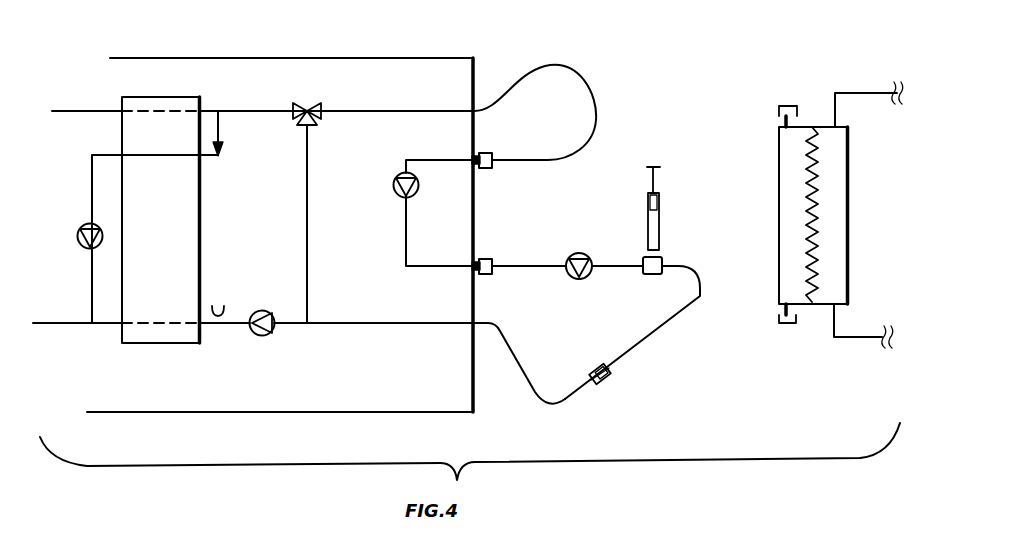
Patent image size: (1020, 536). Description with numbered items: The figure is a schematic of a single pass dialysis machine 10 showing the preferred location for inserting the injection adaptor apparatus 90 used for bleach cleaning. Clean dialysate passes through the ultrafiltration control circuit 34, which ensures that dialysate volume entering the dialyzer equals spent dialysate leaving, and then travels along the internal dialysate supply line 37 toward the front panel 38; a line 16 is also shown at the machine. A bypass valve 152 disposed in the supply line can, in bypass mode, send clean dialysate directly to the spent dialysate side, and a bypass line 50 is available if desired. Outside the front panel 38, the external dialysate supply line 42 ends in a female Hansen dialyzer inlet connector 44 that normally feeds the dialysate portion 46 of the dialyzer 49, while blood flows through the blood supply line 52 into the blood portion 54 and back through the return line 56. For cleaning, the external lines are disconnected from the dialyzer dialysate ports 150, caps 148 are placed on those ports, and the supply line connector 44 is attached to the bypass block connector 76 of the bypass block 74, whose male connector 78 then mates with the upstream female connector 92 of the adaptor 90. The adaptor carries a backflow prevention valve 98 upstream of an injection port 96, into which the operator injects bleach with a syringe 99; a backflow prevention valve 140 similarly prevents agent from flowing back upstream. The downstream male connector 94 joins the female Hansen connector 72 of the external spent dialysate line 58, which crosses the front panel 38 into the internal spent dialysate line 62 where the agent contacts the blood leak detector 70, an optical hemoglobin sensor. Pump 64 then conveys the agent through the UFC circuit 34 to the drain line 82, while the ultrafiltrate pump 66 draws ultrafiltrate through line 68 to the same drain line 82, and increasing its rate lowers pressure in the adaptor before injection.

The dialysis machine 10 is at (172, 42).
The supply line 16 is at (75, 111).
The ultrafiltration control circuit 34 is at (170, 214).
The internal dialysate supply line 37 is at (222, 111).
The front panel 38 is at (473, 403).
The external dialysate supply line 42 is at (596, 112).
The dialyzer inlet connector 44 is at (492, 170).
The dialysate portion 46 is at (780, 178).
The dialyzer 49 is at (855, 238).
The bypass line 50 is at (307, 200).
The blood supply line 52 is at (883, 93).
The blood portion 54 is at (849, 182).
The return line 56 is at (850, 340).
The external spent dialysate line 58 is at (517, 357).
The internal spent dialysate line 62 is at (362, 323).
The pump 64 is at (274, 333).
The ultrafiltrate pump 66 is at (85, 246).
The line 68 is at (90, 180).
The blood leak detector 70 is at (218, 333).
The Hansen connector 72 is at (600, 386).
The bypass block 74 is at (406, 242).
The bypass block connector 76 is at (480, 156).
The bypass block male connector 78 is at (478, 262).
The drain line 82 is at (60, 323).
The injection adaptor apparatus 90 is at (668, 296).
The upstream connector 92 is at (495, 275).
The downstream connector 94 is at (605, 366).
The injection port 96 is at (665, 260).
The backflow prevention valve 98 is at (586, 255).
The syringe 99 is at (648, 216).
The backflow prevention valve 140 is at (398, 176).
The caps 148 is at (797, 105).
The dialyzer dialysate ports 150 is at (784, 120).
The bypass valve 152 is at (312, 104).